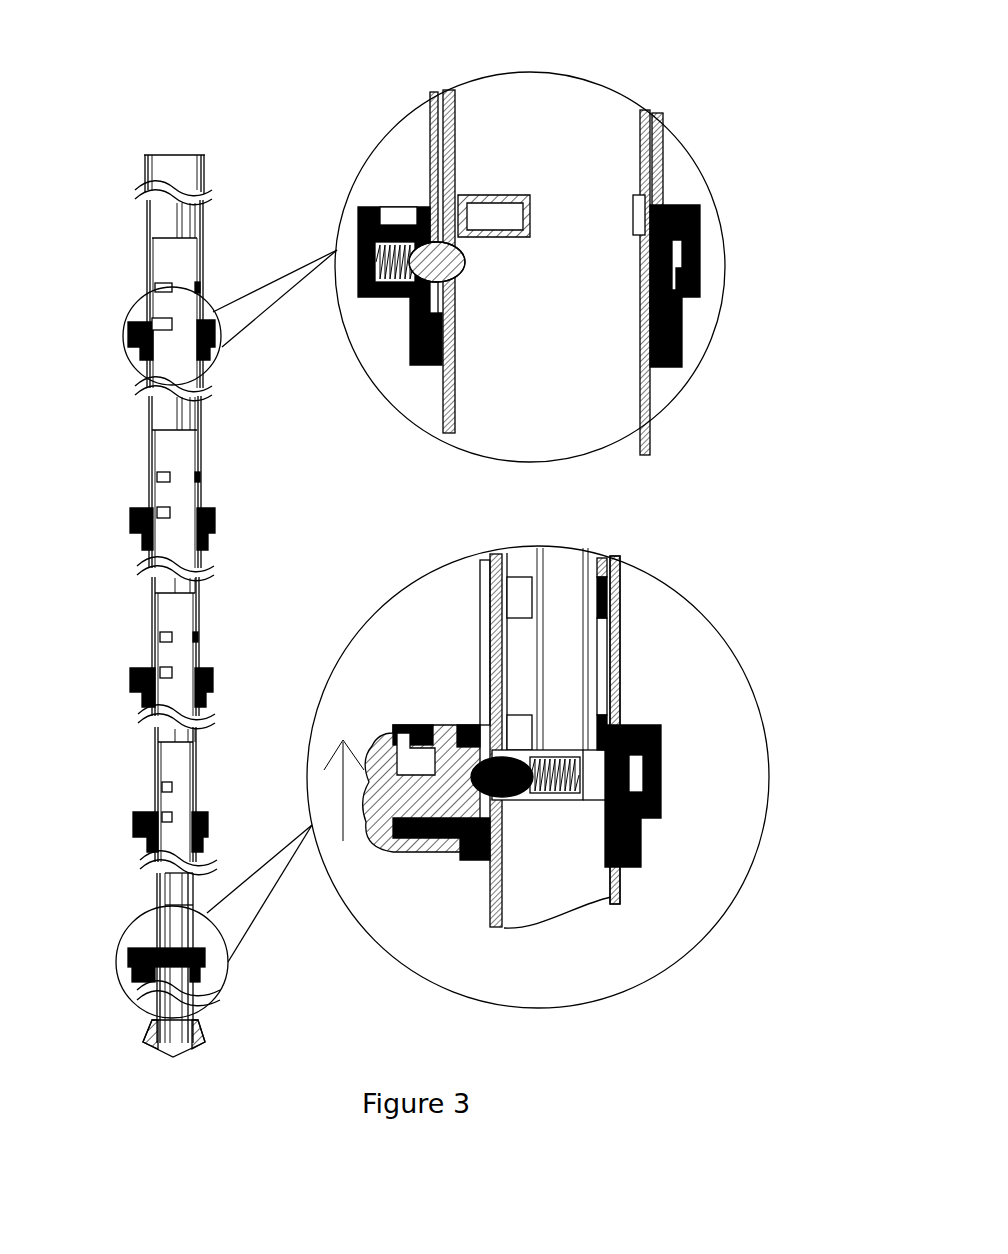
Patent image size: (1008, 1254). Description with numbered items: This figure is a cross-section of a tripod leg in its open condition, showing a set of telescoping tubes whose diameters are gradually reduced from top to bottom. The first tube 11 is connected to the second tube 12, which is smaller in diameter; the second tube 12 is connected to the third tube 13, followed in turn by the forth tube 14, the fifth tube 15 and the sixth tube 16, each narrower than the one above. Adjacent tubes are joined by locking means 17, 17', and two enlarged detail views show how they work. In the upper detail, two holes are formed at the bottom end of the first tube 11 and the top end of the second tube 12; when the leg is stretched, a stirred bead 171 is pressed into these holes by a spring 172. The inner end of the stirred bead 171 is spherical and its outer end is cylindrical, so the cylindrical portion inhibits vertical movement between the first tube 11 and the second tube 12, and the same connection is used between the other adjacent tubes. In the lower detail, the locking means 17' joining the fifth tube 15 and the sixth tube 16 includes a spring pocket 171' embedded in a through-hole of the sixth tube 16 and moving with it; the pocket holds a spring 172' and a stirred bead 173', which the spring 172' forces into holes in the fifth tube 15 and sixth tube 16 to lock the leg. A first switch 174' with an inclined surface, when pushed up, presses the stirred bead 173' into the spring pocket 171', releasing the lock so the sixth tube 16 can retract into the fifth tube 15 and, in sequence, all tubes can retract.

The first tube 11 is at (195, 172).
The second tube 12 is at (200, 412).
The third tube 13 is at (210, 587).
The forth tube 14 is at (195, 735).
The fifth tube 15 is at (202, 868).
The sixth tube 16 is at (195, 1000).
The locking means 17 is at (195, 305).
The locking means 17' is at (185, 921).
The stirred bead 171 is at (396, 331).
The spring 172 is at (491, 272).
The spring pocket 171' is at (595, 723).
The spring 172' is at (674, 794).
The stirred bead 173' is at (465, 730).
The first switch 174' is at (407, 822).